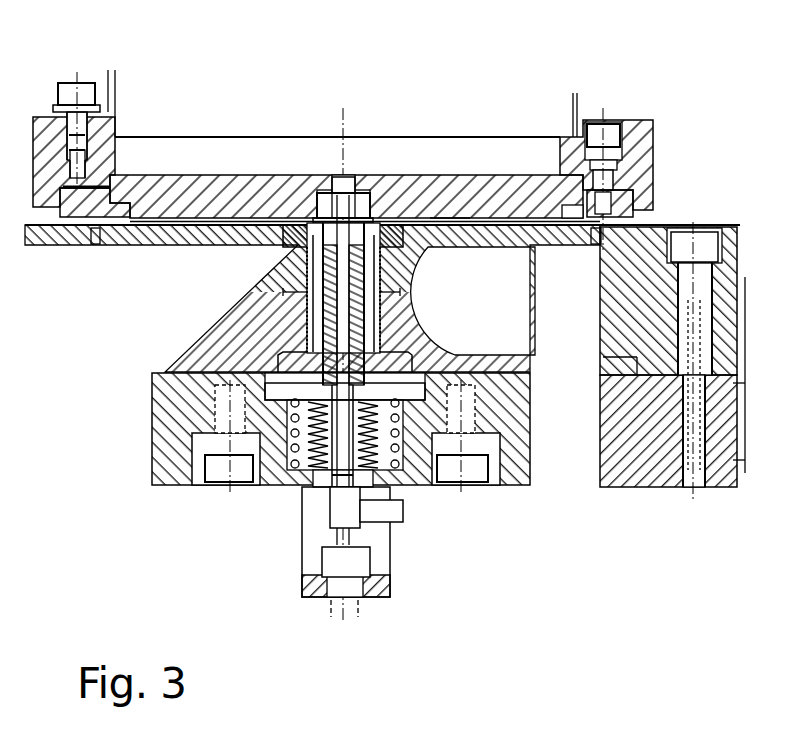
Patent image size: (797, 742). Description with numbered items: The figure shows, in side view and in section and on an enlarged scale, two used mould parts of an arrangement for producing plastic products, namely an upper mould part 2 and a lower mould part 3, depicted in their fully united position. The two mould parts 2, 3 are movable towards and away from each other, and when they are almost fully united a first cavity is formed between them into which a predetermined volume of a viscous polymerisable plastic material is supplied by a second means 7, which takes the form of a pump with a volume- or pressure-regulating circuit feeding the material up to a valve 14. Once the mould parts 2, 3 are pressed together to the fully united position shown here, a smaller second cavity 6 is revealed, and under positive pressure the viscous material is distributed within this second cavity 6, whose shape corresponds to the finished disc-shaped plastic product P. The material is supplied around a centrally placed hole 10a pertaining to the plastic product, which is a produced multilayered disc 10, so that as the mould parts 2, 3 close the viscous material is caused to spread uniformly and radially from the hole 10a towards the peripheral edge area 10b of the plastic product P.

The upper mould part 2 is at (201, 185).
The lower mould part 3 is at (138, 302).
The second cavity 6 is at (487, 232).
The second means 7 is at (428, 513).
The multilayered disc 10 is at (435, 238).
The centrally placed hole 10a is at (393, 203).
The peripheral edge area 10b is at (100, 245).
The valve 14 is at (302, 248).
The plastic product P is at (448, 218).